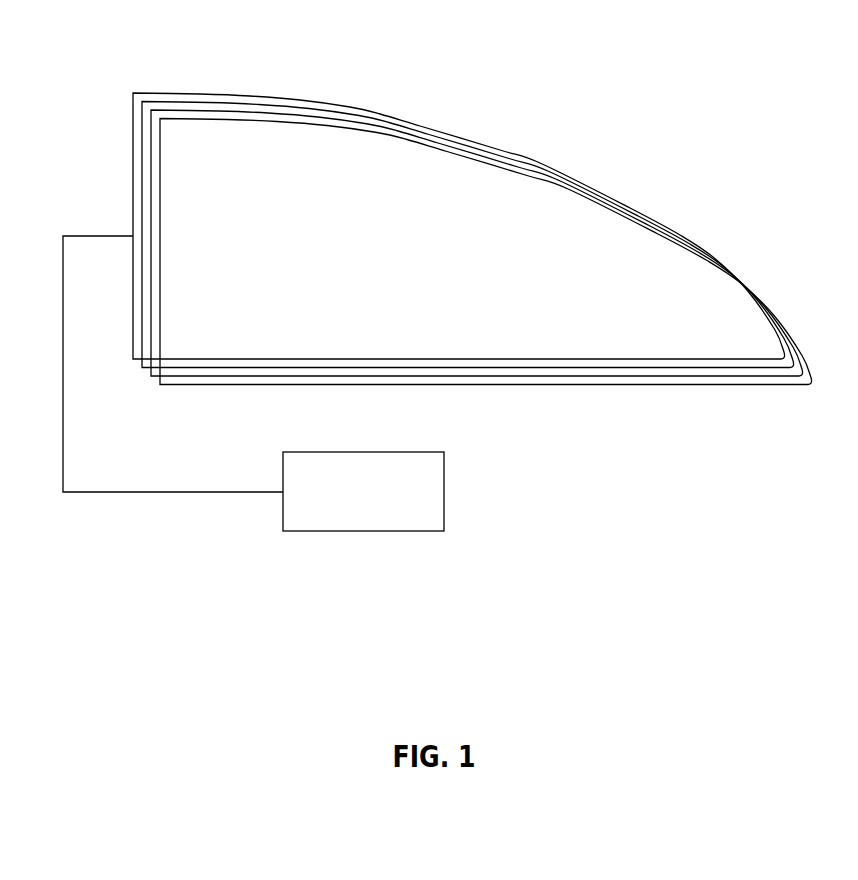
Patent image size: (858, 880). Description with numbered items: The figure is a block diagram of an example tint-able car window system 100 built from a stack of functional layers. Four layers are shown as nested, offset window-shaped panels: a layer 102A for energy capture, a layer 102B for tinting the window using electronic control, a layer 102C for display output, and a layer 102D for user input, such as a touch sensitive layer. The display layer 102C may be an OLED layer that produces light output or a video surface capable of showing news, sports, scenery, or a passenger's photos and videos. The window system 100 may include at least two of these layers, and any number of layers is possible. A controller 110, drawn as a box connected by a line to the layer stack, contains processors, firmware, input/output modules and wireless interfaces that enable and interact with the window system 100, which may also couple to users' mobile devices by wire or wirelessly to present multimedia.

The window system 100 is at (526, 70).
The layer for energy capture 102A is at (170, 94).
The layer for tinting the window 102B is at (231, 104).
The layer for display output 102C is at (280, 116).
The layer for user input 102D is at (333, 128).
The controller 110 is at (432, 452).